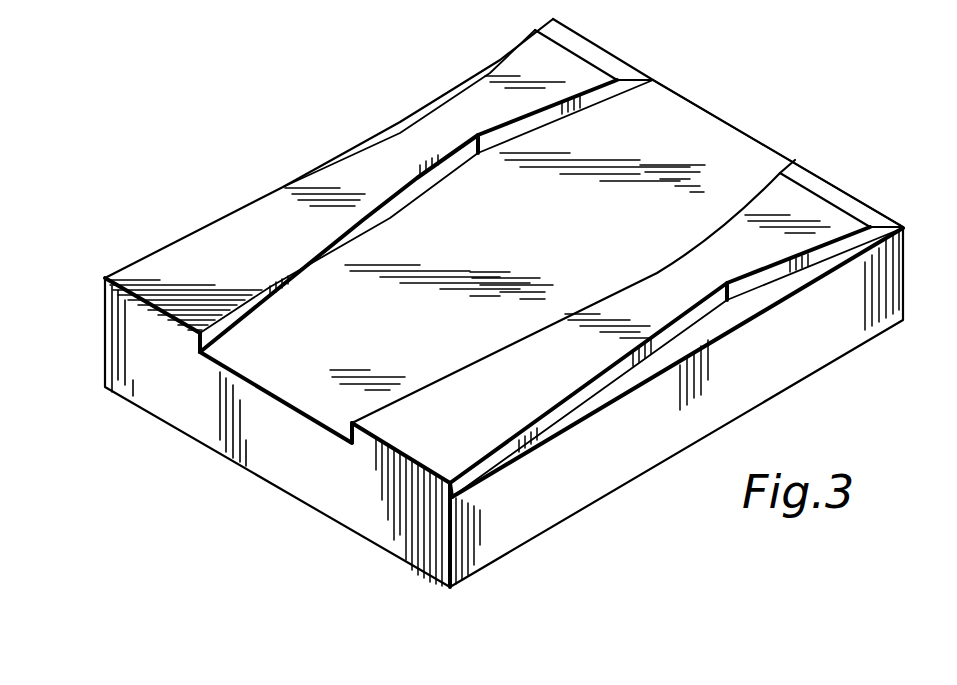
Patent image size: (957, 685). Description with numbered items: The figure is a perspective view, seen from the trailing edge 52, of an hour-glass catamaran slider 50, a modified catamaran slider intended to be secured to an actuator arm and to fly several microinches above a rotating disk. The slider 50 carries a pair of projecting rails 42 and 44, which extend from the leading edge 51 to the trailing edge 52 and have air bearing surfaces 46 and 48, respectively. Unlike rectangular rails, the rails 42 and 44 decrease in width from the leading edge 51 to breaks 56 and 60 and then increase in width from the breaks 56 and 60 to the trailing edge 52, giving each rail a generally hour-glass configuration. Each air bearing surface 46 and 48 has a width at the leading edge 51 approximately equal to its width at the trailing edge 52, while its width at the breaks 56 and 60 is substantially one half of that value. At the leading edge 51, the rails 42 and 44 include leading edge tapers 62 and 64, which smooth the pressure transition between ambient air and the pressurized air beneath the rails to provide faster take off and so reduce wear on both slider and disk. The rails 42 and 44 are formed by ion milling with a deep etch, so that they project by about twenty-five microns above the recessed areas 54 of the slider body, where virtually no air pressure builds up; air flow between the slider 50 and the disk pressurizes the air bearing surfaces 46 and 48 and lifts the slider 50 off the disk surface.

The projecting rail 42 is at (145, 309).
The projecting rail 44 is at (408, 476).
The air bearing surface 46 is at (207, 263).
The air bearing surface 48 is at (505, 370).
The hour-glass catamaran slider 50 is at (266, 151).
The leading edge 51 is at (713, 118).
The trailing edge 52 is at (270, 400).
The recessed areas 54 is at (680, 350).
The break 56 is at (435, 104).
The break 60 is at (740, 290).
The leading edge taper 62 is at (595, 52).
The leading edge taper 64 is at (835, 195).